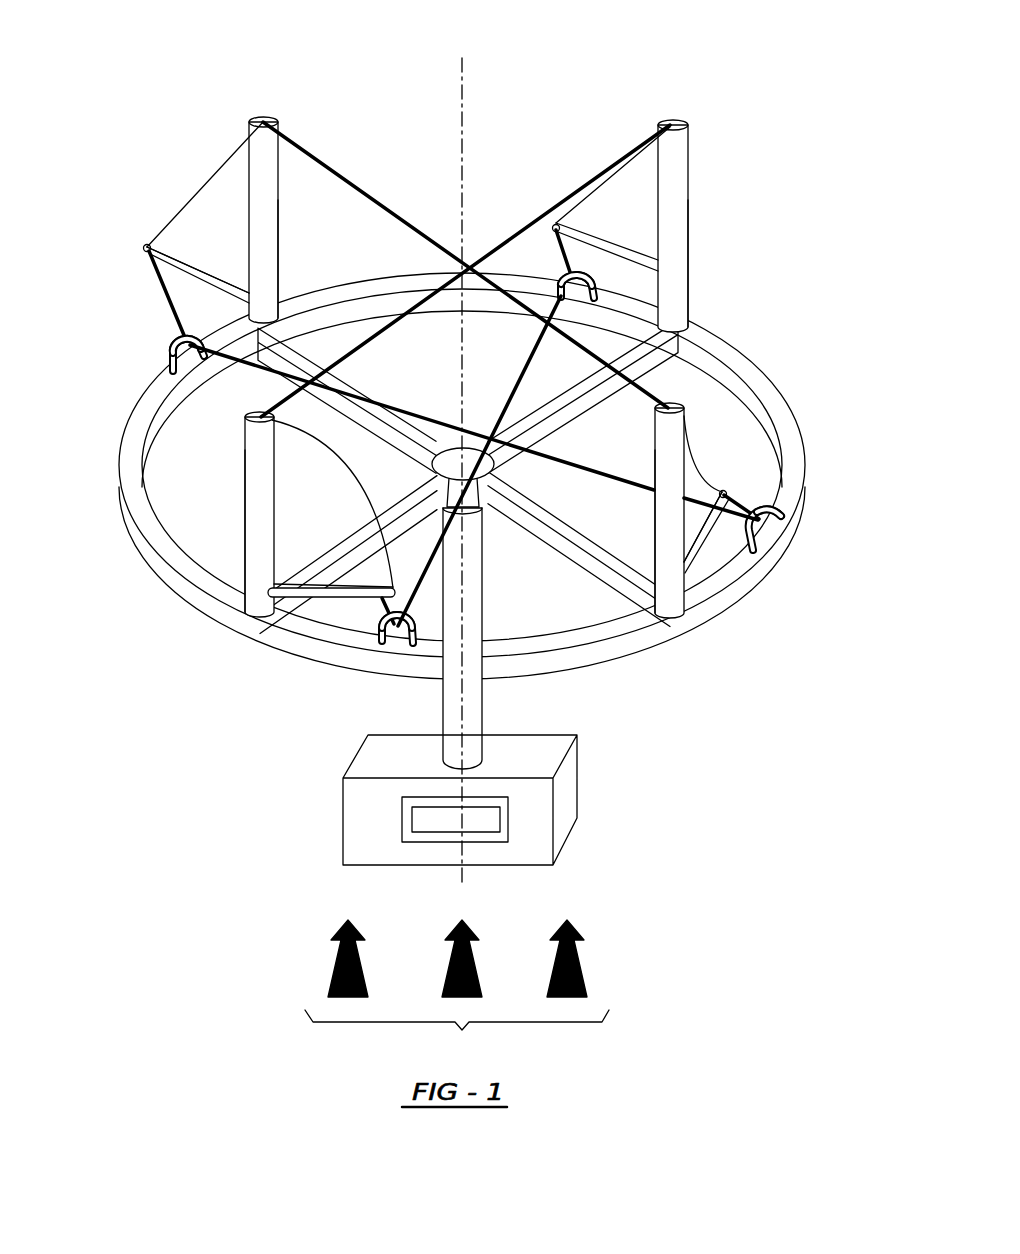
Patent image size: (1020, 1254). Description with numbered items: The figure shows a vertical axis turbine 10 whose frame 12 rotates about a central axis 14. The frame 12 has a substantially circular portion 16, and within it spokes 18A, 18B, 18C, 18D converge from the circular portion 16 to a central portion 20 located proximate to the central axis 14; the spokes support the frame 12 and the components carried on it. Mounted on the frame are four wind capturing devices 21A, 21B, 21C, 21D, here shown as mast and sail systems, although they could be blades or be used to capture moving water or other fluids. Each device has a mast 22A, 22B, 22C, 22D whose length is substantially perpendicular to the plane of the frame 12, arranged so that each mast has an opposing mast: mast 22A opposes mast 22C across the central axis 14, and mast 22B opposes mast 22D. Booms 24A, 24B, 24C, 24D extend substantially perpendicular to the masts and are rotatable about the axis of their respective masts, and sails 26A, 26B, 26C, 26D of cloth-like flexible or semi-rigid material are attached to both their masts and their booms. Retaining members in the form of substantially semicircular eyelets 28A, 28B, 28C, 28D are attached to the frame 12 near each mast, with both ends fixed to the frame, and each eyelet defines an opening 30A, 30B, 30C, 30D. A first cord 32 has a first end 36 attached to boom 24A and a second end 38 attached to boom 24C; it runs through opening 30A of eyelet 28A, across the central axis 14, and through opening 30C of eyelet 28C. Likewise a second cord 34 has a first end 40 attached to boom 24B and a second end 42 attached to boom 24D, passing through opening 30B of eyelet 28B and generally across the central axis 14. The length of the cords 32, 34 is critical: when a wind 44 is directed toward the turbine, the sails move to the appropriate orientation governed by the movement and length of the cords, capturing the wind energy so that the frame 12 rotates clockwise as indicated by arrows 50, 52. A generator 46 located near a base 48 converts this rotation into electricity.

The vertical axis turbine 10 is at (728, 37).
The frame 12 is at (722, 340).
The central axis 14 is at (462, 68).
The substantially circular portion 16 is at (742, 352).
The spoke 18A is at (318, 364).
The spoke 18B is at (558, 406).
The spoke 18C is at (610, 563).
The spoke 18D is at (392, 522).
The central portion 20 is at (450, 458).
The wind capturing device 21A is at (281, 259).
The wind capturing device 21B is at (690, 249).
The wind capturing device 21C is at (654, 474).
The wind capturing device 21D is at (245, 443).
The mast 22A is at (278, 160).
The mast 22B is at (690, 150).
The mast 22C is at (680, 408).
The mast 22D is at (244, 541).
The boom 24A is at (147, 245).
The boom 24B is at (553, 222).
The boom 24C is at (722, 492).
The boom 24D is at (400, 587).
The sail 26A is at (222, 195).
The sail 26B is at (623, 196).
The sail 26C is at (696, 492).
The sail 26D is at (298, 474).
The eyelet 28A is at (172, 356).
The eyelet 28B is at (567, 272).
The eyelet 28C is at (783, 514).
The eyelet 28D is at (378, 632).
The opening 30A is at (178, 338).
The opening 30B is at (563, 302).
The opening 30C is at (763, 530).
The opening 30D is at (401, 633).
The first cord 32 is at (216, 368).
The second cord 34 is at (518, 378).
The first end 36 is at (156, 266).
The second end 38 is at (733, 507).
The first end 40 is at (552, 229).
The second end 42 is at (380, 595).
The wind 44 is at (457, 989).
The generator 46 is at (490, 818).
The base 48 is at (473, 750).
The arrow 50 is at (78, 365).
The arrow 52 is at (850, 365).